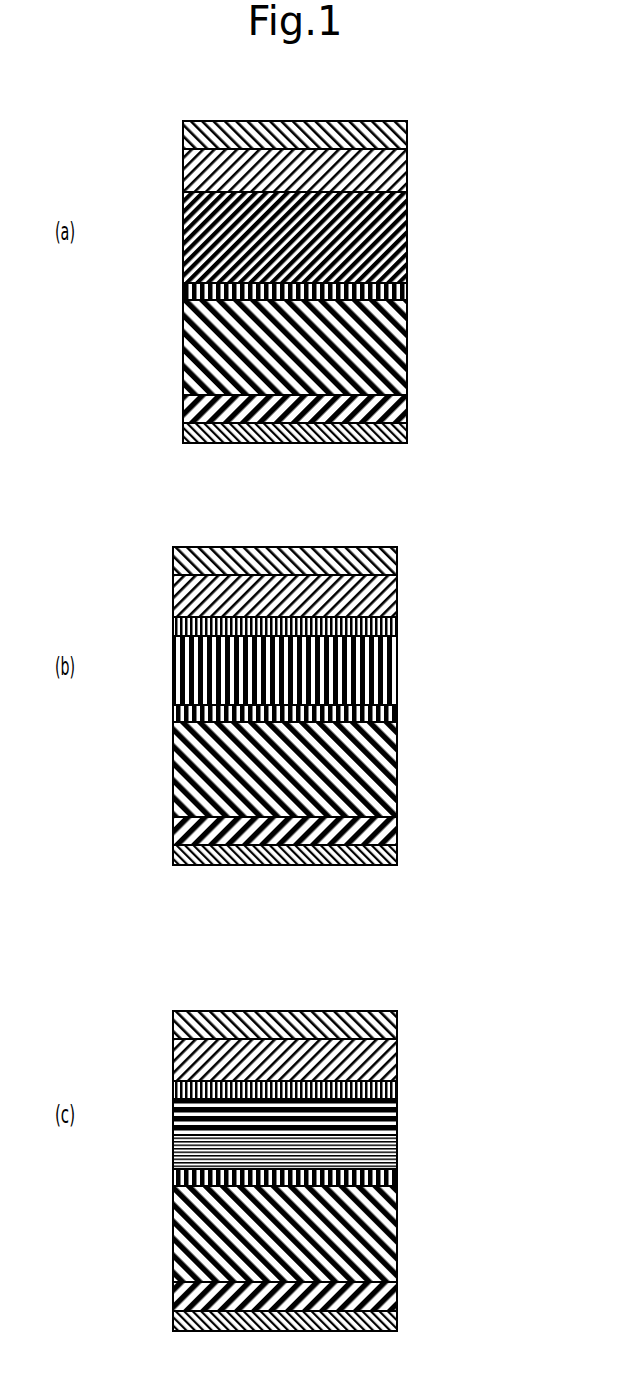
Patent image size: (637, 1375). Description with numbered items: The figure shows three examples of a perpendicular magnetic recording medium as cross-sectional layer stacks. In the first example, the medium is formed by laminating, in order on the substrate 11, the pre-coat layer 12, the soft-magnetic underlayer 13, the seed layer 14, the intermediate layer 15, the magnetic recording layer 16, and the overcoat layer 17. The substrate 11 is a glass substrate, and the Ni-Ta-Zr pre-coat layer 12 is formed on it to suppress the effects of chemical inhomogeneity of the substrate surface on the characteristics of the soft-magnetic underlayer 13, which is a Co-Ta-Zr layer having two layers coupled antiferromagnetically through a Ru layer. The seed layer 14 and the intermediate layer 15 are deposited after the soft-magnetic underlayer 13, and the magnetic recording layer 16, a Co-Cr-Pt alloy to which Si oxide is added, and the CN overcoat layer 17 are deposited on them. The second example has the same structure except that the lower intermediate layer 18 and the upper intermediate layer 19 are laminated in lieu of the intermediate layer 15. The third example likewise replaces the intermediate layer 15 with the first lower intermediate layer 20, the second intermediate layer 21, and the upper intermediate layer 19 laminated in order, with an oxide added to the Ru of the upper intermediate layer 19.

The substrate 11 is at (405, 430).
The pre-coat layer 12 is at (402, 412).
The soft-magnetic underlayer 13 is at (400, 367).
The seed layer 14 is at (402, 292).
The intermediate layer 15 is at (406, 235).
The magnetic recording layer 16 is at (406, 175).
The overcoat layer 17 is at (406, 135).
The lower intermediate layer 18 is at (388, 673).
The upper intermediate layer 19 is at (396, 627).
The first lower intermediate layer 20 is at (396, 1148).
The second intermediate layer 21 is at (396, 1118).